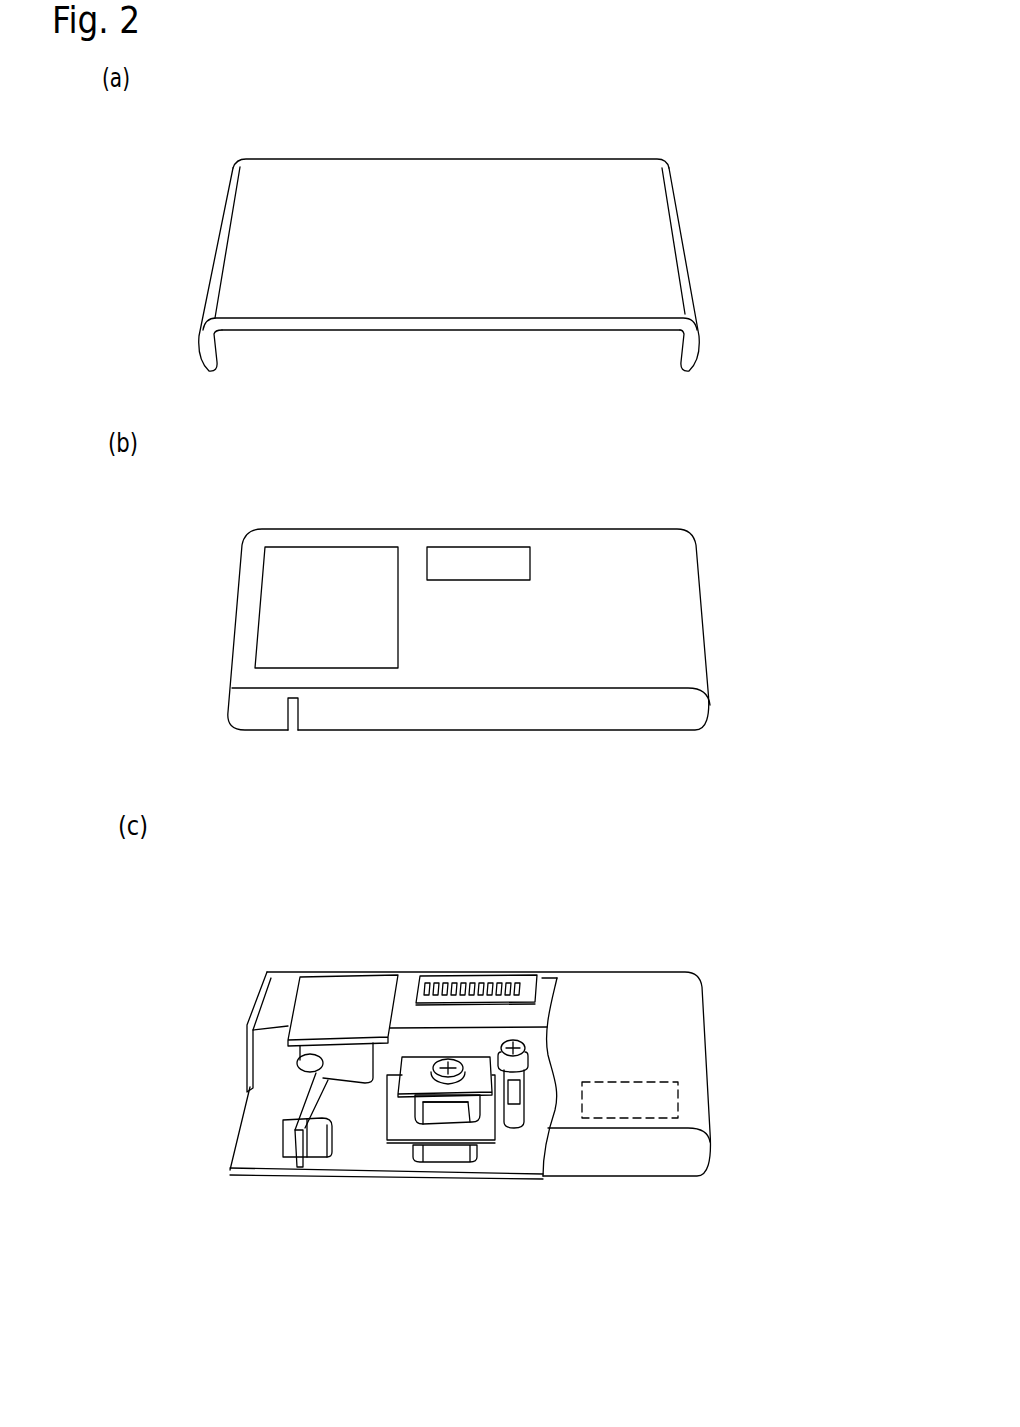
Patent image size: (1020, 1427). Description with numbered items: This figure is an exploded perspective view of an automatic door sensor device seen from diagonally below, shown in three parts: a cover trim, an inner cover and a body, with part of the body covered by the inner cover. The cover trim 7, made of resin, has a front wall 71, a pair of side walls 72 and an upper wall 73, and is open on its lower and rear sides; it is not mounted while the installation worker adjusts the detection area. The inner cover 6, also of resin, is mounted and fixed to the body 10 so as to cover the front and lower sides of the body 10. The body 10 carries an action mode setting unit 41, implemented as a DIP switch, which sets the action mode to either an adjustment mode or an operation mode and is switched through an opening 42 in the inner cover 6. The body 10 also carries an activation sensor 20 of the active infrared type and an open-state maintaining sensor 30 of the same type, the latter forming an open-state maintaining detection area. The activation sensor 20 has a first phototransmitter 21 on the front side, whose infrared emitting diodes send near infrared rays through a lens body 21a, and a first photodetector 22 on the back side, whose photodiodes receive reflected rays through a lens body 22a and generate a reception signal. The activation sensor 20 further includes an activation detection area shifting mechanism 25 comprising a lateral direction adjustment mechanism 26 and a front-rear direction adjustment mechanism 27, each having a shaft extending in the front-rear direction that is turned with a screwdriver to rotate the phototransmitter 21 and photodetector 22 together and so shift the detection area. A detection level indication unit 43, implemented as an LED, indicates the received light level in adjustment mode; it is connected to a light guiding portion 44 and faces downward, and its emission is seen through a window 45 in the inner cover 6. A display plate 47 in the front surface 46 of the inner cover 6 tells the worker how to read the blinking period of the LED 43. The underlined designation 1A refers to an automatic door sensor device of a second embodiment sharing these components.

The cover trim 7 is at (454, 248).
The front wall 71 is at (481, 290).
The side walls 72 is at (218, 252).
The upper wall 73 is at (537, 160).
The inner cover 6 is at (504, 623).
The opening 42 is at (472, 555).
The window 45 is at (293, 715).
The front surface 46 is at (626, 553).
The display plate 47 is at (338, 565).
The body 10 is at (717, 1027).
The activation sensor 20 is at (452, 1247).
The first phototransmitter 21 is at (420, 1112).
The lens body 21a is at (453, 1113).
The first photodetector 22 is at (433, 1153).
The lens body 22a is at (462, 1152).
The activation detection area shifting mechanism 25 is at (475, 981).
The lateral direction adjustment mechanism 26 is at (433, 1048).
The front-rear direction adjustment mechanism 27 is at (523, 1040).
The open-state maintaining sensor 30 is at (678, 1097).
The action mode setting unit 41 is at (474, 984).
The detection level indication unit 43 is at (283, 1162).
The light guiding portion 44 is at (303, 1106).
The automatic door sensor device 1A is at (767, 1270).